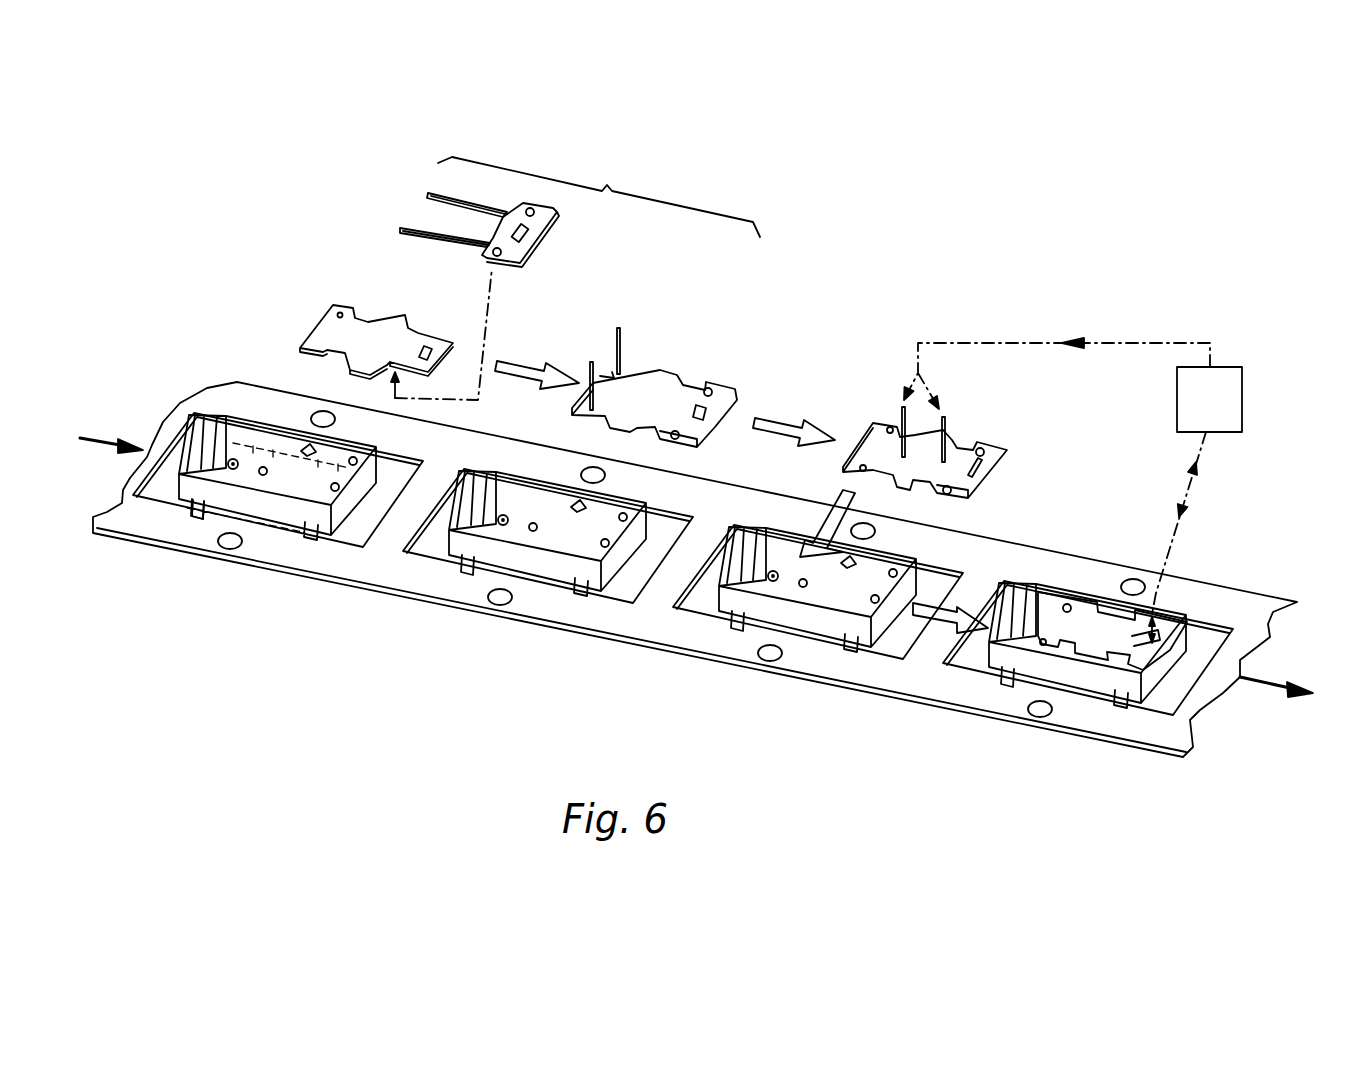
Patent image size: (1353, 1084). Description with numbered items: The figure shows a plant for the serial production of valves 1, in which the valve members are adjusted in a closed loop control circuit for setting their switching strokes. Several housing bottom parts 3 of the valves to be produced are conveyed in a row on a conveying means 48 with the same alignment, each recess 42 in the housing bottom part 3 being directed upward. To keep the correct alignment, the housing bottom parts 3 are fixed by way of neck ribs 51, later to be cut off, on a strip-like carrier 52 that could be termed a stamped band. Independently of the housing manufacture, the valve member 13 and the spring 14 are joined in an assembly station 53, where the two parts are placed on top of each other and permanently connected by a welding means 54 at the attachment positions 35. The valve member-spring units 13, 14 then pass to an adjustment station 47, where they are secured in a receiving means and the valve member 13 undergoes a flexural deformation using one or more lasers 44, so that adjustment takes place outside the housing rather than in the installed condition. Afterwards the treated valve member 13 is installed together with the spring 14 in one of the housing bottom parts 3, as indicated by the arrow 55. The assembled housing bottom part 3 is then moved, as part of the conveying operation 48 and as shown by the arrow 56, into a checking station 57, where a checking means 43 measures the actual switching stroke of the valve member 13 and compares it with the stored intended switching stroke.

The valve 1 is at (258, 524).
The housing bottom part 3 is at (290, 519).
The valve member 13 is at (387, 316).
The spring 14 is at (543, 223).
The attachment positions 35 is at (628, 378).
The recess 42 is at (736, 614).
The checking means 43 is at (1226, 416).
The laser 44 is at (901, 408).
The adjustment station 47 is at (905, 350).
The conveying means 48 is at (93, 437).
The neck ribs 51 is at (197, 517).
The strip-like carrier 52 is at (622, 640).
The assembly station 53 is at (315, 603).
The welding means 54 is at (618, 332).
The arrow 55 is at (848, 492).
The arrow 56 is at (928, 606).
The checking station 57 is at (1236, 493).